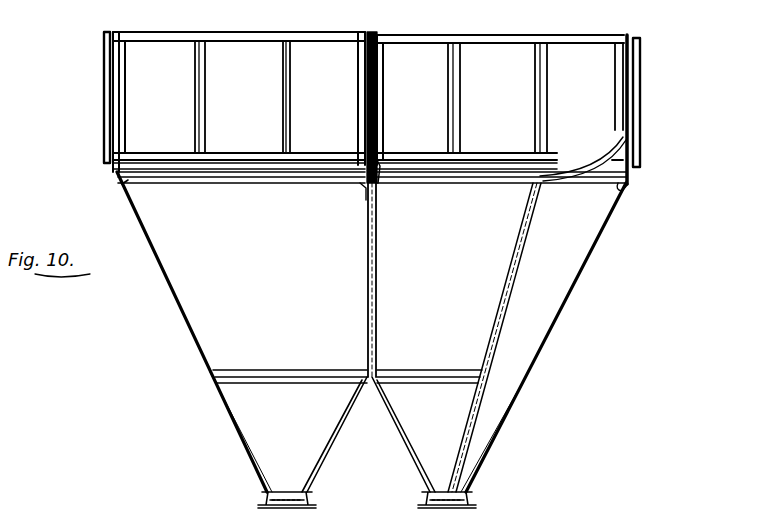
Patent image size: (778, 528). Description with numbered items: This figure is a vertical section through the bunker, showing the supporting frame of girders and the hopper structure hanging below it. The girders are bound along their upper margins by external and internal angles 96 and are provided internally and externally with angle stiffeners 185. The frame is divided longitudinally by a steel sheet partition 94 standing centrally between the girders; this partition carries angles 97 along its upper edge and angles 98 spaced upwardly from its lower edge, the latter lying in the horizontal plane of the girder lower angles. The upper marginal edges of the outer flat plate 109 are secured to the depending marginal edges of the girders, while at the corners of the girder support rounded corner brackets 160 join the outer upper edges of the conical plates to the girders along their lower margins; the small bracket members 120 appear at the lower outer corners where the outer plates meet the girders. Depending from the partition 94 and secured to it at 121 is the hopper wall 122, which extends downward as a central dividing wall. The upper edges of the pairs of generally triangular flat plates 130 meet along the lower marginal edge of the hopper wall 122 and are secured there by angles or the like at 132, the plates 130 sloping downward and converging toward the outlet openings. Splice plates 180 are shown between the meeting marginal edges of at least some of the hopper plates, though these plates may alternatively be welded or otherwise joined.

The external and internal angles 96 is at (511, 23).
The angles 97 is at (362, 43).
The partition 94 is at (366, 128).
The angles 98 is at (379, 162).
The stiffeners 185 is at (105, 96).
The corner brackets 160 is at (594, 162).
The corner brackets 120 is at (124, 186).
The securing point 121 is at (364, 188).
The hopper wall 122 is at (377, 266).
The splice plates 180 is at (512, 251).
The flat plate 109 is at (180, 318).
The angles 132 is at (362, 372).
The flat plates 130 is at (345, 420).